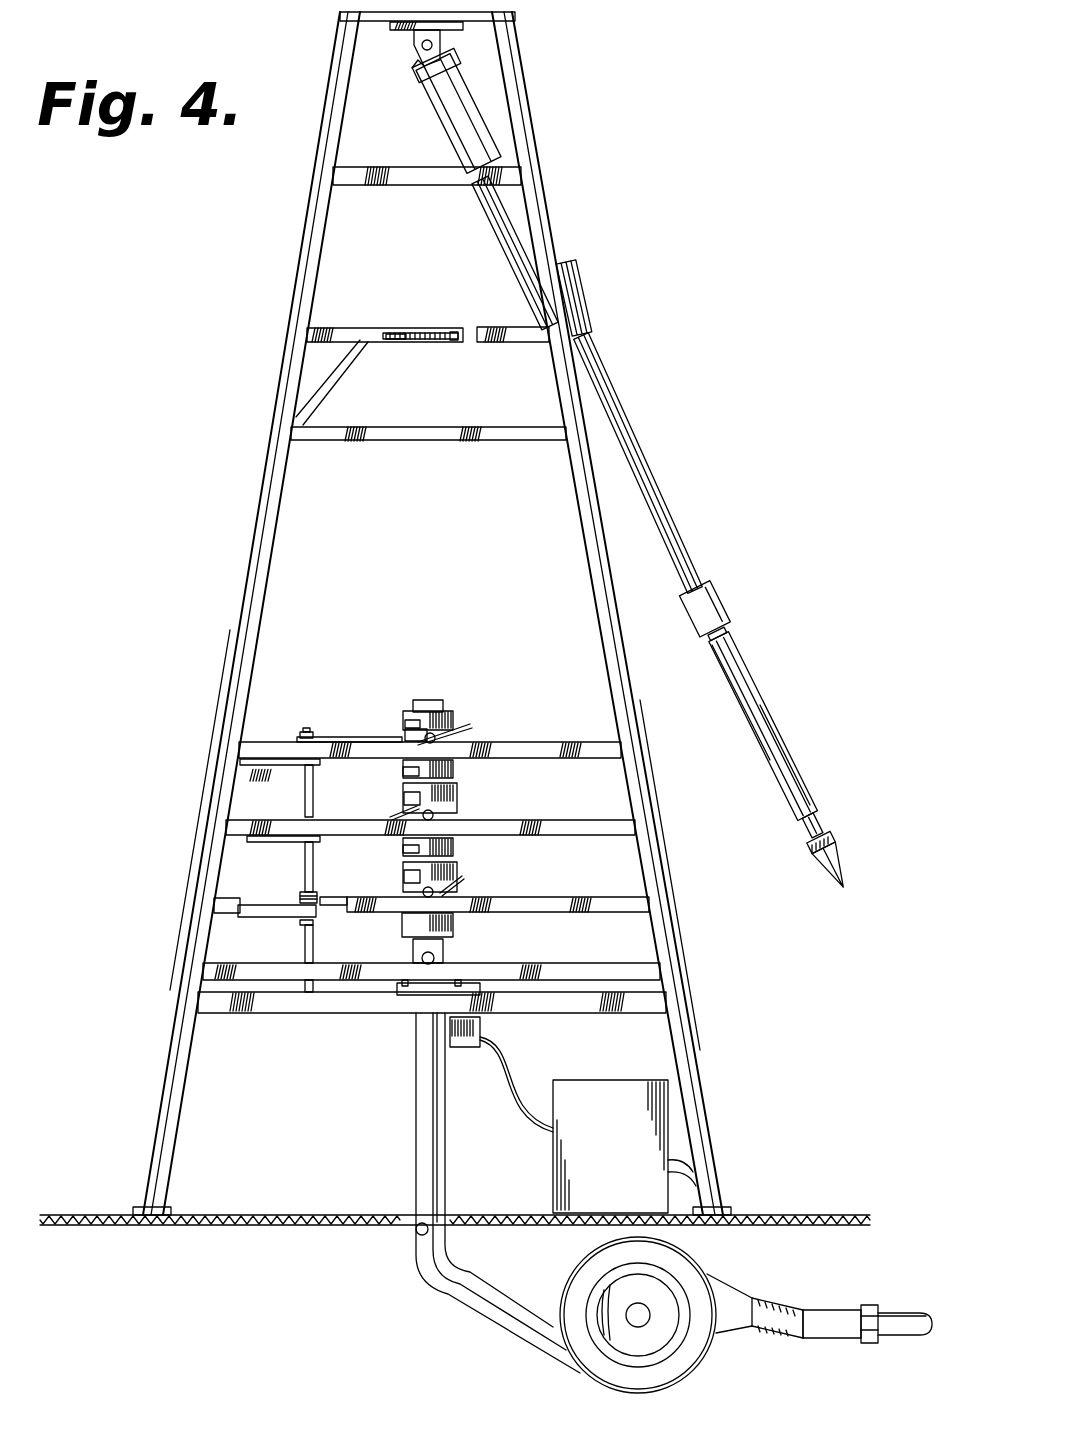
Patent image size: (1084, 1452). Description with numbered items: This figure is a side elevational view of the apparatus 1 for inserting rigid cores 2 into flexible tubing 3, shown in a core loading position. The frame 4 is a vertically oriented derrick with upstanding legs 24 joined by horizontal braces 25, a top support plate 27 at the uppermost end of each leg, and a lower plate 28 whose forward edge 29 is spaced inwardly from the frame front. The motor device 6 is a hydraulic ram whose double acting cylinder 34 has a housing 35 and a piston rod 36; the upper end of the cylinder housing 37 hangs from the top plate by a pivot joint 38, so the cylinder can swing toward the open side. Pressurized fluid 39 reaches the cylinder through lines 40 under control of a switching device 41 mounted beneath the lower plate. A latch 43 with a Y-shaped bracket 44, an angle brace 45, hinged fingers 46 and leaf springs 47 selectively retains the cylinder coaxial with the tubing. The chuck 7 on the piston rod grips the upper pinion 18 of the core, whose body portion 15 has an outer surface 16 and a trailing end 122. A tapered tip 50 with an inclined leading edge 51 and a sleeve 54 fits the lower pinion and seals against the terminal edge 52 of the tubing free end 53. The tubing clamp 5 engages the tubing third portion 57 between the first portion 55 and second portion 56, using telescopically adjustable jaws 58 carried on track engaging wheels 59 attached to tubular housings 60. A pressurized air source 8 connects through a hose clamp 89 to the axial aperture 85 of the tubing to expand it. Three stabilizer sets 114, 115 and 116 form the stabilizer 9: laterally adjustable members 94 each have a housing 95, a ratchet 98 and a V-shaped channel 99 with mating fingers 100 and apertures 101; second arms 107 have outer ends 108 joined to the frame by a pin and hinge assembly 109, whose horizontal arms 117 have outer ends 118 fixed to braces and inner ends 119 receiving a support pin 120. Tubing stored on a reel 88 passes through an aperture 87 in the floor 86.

The apparatus 1 is at (682, 243).
The rigid core 2 is at (773, 699).
The flexible tubing 3 is at (416, 1152).
The frame 4 is at (243, 570).
The tubing clamp 5 is at (424, 954).
The motor device 6 is at (437, 117).
The chuck 7 is at (718, 600).
The pressurized air source 8 is at (890, 1310).
The stabilizer 9 is at (403, 710).
The core body portion 15 is at (732, 697).
The outer surface 16 is at (793, 754).
The pinions 18 is at (802, 825).
The legs 24 is at (160, 1098).
The horizontal braces 25 is at (522, 343).
The top support plate 27 is at (500, 8).
The lower plate 28 is at (260, 1015).
The forward edge 29 is at (480, 1015).
The double acting cylinder 34 is at (485, 207).
The cylinder housing 35 is at (575, 300).
The piston rod 36 is at (632, 446).
The upper end of cylinder housing 37 is at (415, 74).
The pivot joint 38 is at (414, 50).
The source of pressurized fluid 39 is at (624, 1146).
The lines 40 is at (695, 920).
The switching device 41 is at (460, 1048).
The latch 43 is at (453, 325).
The Y-shaped bracket 44 is at (348, 330).
The angle brace 45 is at (345, 385).
The hinged fingers 46 is at (470, 342).
The leaf springs 47 is at (414, 342).
The tapered tip 50 is at (840, 780).
The inclined leading edge 51 is at (828, 885).
The terminal edge 52 is at (430, 700).
The tubing free end 53 is at (447, 702).
The sleeve 54 is at (813, 862).
The tubing first portion 55 is at (410, 708).
The tubing second portion 56 is at (445, 1165).
The tubing third portion 57 is at (448, 945).
The telescopically adjustable jaws 58 is at (444, 958).
The track engaging wheels 59 is at (405, 1018).
The tubular housing 60 is at (418, 958).
The axial aperture 85 is at (810, 1305).
The floor 86 is at (228, 1213).
The aperture 87 is at (418, 1235).
The reel 88 is at (607, 1276).
The hose clamp 89 is at (866, 1343).
The laterally adjustable stabilizer members 94 is at (392, 878).
The stabilizer housing 95 is at (405, 732).
The ratchet 98 is at (400, 812).
The V-shaped channel 99 is at (455, 770).
The mating fingers 100 is at (458, 728).
The apertures 101 is at (403, 771).
The second arms 107 is at (338, 735).
The outer end of second arm 108 is at (300, 896).
The pin and hinge assembly 109 is at (300, 732).
The uppermost stabilizer set 114 is at (348, 737).
The middle stabilizer set 115 is at (458, 792).
The lower stabilizer set 116 is at (355, 895).
The horizontally positioned arms 117 is at (240, 765).
The outer end of arm 118 is at (238, 762).
The inner end of arm 119 is at (305, 770).
The support pin 120 is at (305, 805).
The trailing end 122 is at (722, 630).